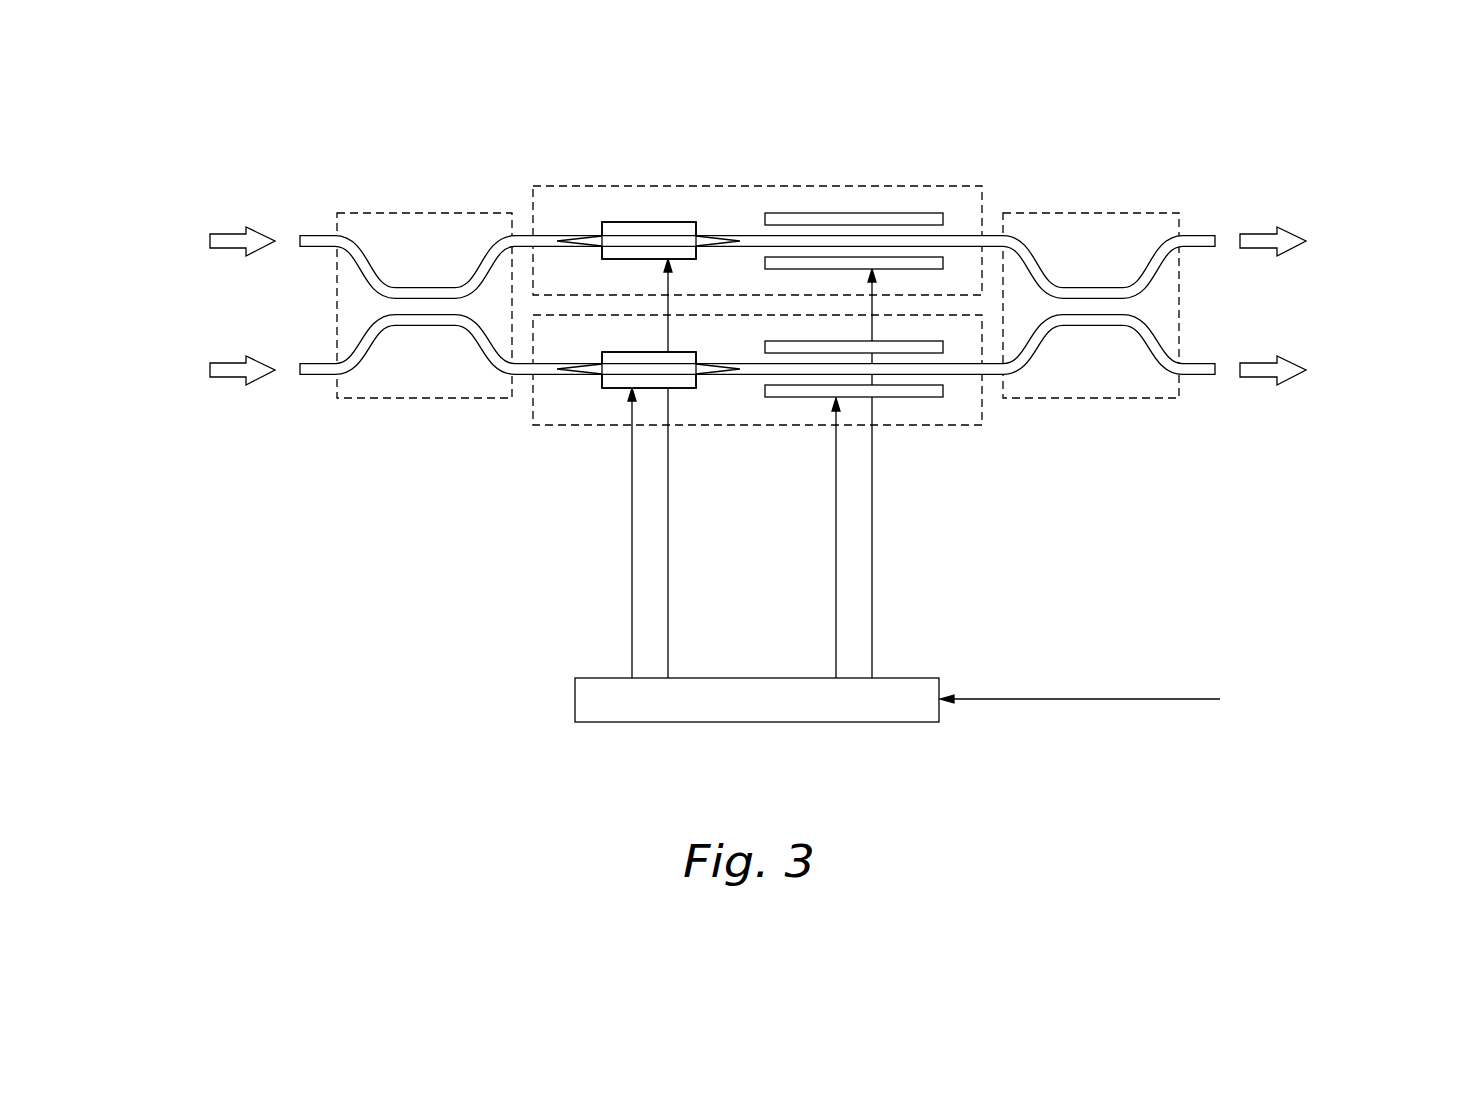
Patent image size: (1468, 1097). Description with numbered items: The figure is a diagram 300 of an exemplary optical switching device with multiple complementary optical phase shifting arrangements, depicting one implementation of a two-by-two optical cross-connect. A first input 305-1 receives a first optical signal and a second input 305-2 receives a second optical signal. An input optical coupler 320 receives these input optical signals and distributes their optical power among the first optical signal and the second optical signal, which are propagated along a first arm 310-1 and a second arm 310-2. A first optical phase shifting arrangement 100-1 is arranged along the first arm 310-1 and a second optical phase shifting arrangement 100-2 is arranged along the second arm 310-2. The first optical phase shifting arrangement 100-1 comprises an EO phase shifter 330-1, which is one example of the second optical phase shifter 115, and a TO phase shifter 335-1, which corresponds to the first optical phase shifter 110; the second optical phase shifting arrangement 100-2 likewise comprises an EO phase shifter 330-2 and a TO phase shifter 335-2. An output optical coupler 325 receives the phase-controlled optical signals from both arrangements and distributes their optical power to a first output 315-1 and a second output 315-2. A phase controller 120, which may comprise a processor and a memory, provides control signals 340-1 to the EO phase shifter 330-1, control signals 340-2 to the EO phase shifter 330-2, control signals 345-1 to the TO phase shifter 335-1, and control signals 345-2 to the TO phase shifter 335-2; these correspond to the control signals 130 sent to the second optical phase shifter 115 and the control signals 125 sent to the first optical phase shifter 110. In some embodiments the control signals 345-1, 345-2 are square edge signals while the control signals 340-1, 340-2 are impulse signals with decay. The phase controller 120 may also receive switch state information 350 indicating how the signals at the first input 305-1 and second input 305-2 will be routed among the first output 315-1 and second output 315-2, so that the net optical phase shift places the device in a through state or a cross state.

The diagram 300 is at (763, 449).
The first input 305-1 is at (227, 232).
The second input 305-2 is at (225, 378).
The first output 315-1 is at (1257, 233).
The second output 315-2 is at (1257, 378).
The input optical coupler 320 is at (413, 398).
The output optical coupler 325 is at (1097, 398).
The first optical phase shifting arrangement 100-1 is at (756, 201).
The second optical phase shifting arrangement 100-2 is at (756, 407).
The first arm 310-1 is at (548, 248).
The second arm 310-2 is at (545, 362).
The EO phase shifter 330-1 is at (549, 183).
The EO phase shifter 330-2 is at (614, 388).
The second optical phase shifter 115 is at (614, 222).
The TO phase shifter 335-1 is at (937, 188).
The TO phase shifter 335-2 is at (902, 407).
The first optical phase shifter 110 is at (902, 206).
The control signals 340-1 is at (743, 468).
The control signals 340-2 is at (631, 596).
The control signals 130 is at (669, 539).
The control signals 345-1 is at (947, 473).
The control signals 345-2 is at (835, 596).
The control signals 125 is at (873, 539).
The phase controller 120 is at (748, 722).
The switch state information 350 is at (1084, 700).